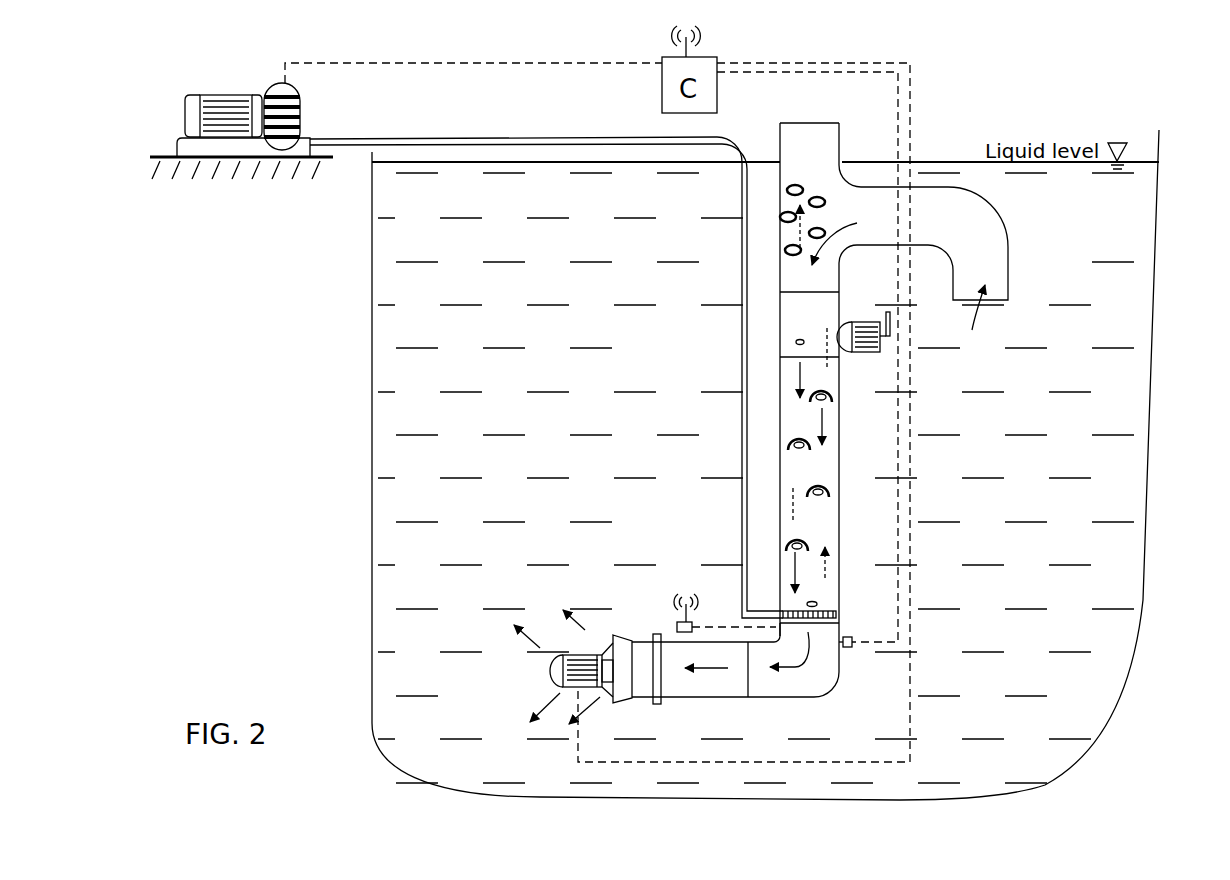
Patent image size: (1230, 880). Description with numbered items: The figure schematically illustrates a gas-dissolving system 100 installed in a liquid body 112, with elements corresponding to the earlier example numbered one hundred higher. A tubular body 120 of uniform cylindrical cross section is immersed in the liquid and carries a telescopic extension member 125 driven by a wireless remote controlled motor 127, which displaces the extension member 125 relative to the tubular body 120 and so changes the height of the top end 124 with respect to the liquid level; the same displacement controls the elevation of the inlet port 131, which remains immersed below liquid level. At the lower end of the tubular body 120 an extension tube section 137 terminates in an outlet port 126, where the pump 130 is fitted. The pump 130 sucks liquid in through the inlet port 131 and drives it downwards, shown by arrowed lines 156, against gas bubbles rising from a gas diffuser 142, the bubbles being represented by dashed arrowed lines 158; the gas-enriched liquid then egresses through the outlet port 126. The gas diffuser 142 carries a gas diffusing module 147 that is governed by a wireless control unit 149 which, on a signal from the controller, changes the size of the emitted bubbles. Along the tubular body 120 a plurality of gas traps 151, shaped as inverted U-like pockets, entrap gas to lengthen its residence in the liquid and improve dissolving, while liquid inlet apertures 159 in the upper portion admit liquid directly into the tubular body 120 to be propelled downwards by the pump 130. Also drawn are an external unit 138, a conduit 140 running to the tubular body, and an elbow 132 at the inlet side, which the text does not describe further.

The system 100 is at (1078, 88).
The liquid body 112 is at (1127, 388).
The tubular body 120 is at (778, 402).
The top end 124 is at (810, 128).
The telescopic extension member 125 is at (838, 183).
The outlet port 126 is at (608, 643).
The wireless remote controlled motor 127 is at (880, 355).
The pump 130 is at (555, 672).
The inlet port 131 is at (998, 292).
The elbow 132 is at (980, 230).
The extension tube section 137 is at (723, 688).
The generator 138 is at (246, 95).
The conduit 140 is at (742, 358).
The gas diffuser 142 is at (836, 604).
The gas diffusing module 147 is at (812, 642).
The wireless control unit 149 is at (677, 625).
The gas traps 151 is at (808, 540).
The arrowed lines 156 is at (826, 420).
The dashed arrowed lines 158 is at (790, 508).
The liquid inlet apertures 159 is at (785, 250).